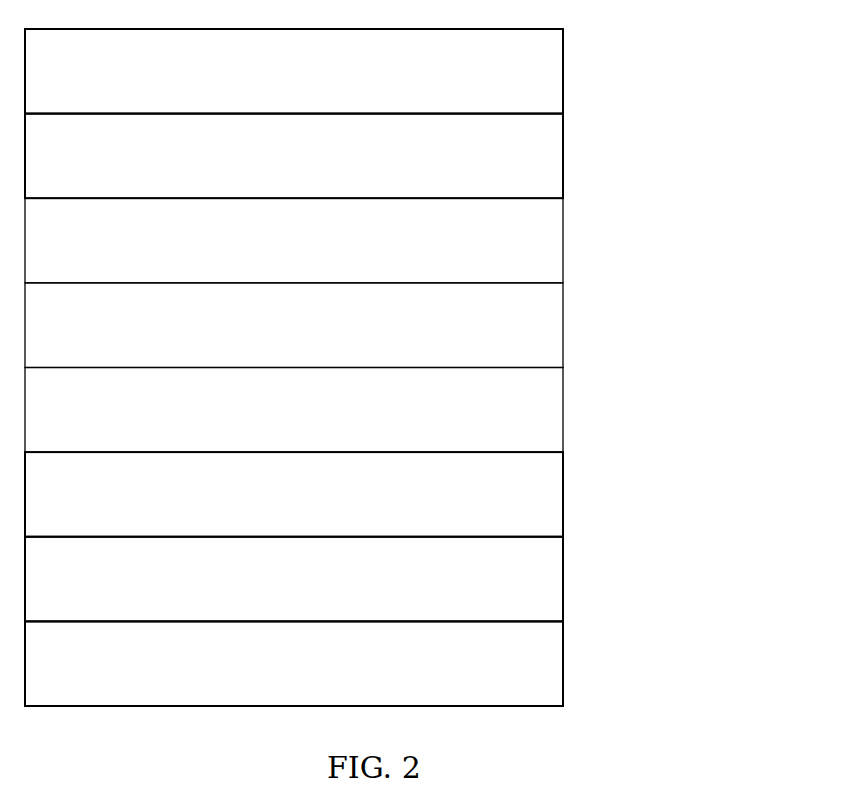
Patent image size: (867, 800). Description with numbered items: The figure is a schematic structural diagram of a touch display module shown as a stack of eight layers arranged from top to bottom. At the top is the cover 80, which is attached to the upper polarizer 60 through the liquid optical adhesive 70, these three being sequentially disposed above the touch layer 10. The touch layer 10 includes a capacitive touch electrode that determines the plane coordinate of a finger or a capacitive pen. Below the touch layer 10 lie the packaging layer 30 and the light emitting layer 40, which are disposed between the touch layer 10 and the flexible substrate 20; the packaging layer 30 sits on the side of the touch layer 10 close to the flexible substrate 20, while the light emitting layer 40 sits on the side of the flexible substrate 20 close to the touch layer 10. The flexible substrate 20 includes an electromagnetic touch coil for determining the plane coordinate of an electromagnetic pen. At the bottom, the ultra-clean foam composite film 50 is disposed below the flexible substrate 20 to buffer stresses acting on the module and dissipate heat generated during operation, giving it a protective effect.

The cover 80 is at (563, 72).
The liquid optical adhesive 70 is at (563, 155).
The upper polarizer 60 is at (563, 240).
The touch layer 10 is at (563, 328).
The packaging layer 30 is at (563, 410).
The light emitting layer 40 is at (563, 495).
The flexible substrate 20 is at (563, 580).
The ultra-clean foam composite film 50 is at (563, 667).